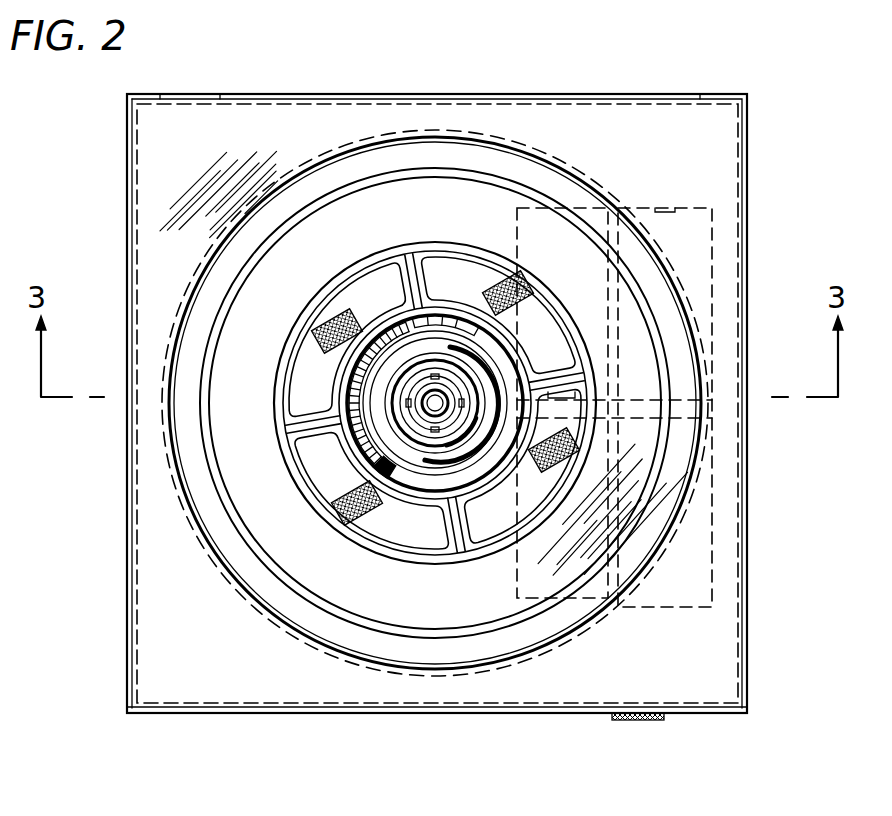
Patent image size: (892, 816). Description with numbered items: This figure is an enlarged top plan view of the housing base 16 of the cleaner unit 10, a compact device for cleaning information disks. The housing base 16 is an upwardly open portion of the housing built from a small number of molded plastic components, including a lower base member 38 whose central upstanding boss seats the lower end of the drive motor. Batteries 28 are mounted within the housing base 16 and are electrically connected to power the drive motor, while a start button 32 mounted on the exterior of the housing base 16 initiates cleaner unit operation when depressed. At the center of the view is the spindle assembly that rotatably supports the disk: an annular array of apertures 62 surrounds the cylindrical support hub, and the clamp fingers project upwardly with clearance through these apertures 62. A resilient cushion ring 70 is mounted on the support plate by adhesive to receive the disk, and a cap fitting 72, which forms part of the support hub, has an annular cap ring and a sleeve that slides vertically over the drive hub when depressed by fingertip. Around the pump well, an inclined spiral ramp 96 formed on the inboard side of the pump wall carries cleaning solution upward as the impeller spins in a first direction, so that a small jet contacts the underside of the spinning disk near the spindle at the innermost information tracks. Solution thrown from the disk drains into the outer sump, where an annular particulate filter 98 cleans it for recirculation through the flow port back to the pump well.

The cleaner unit 10 is at (664, 90).
The housing base 16 is at (270, 722).
The batteries 28 is at (694, 248).
The start button 32 is at (640, 722).
The lower base member 38 is at (435, 714).
The apertures 62 is at (468, 382).
The resilient cushion ring 70 is at (432, 442).
The cap fitting 72 is at (456, 486).
The spiral ramp 96 is at (352, 399).
The annular particulate filter 98 is at (498, 275).